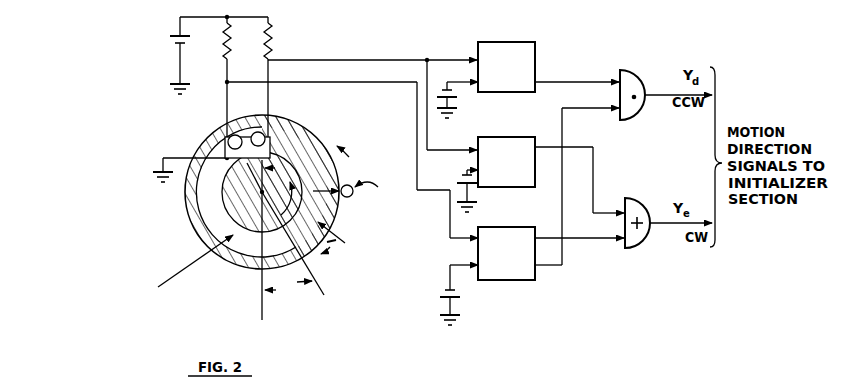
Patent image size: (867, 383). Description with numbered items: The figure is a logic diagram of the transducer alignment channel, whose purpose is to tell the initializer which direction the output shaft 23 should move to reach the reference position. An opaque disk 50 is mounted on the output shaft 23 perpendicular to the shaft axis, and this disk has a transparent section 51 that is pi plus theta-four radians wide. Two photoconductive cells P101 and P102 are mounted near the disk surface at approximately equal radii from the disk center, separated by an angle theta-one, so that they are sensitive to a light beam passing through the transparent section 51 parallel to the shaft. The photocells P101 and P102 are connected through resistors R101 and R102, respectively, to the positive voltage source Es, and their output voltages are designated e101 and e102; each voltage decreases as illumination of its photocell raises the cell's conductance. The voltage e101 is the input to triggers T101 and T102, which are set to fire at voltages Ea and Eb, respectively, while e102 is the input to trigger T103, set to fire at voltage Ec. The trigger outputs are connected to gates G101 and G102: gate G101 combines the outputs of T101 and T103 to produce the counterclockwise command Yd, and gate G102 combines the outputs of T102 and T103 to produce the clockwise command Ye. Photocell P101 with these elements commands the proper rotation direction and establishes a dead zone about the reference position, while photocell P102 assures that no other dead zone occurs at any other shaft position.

The output shaft 23 is at (257, 193).
The opaque disk 50 is at (238, 224).
The transparent section 51 is at (164, 221).
The photoconductive cell P101 is at (362, 150).
The photoconductive cell P102 is at (221, 145).
The resistor R101 is at (210, 38).
The resistor R102 is at (252, 41).
The positive voltage source Es is at (171, 55).
The output voltage e101 is at (372, 94).
The output voltage e102 is at (352, 151).
The trigger T101 is at (506, 57).
The trigger T102 is at (506, 155).
The trigger T103 is at (506, 245).
The firing voltage Ea is at (459, 98).
The firing voltage Eb is at (469, 187).
The firing voltage Ec is at (459, 295).
The gate G101 is at (662, 83).
The gate G102 is at (663, 212).